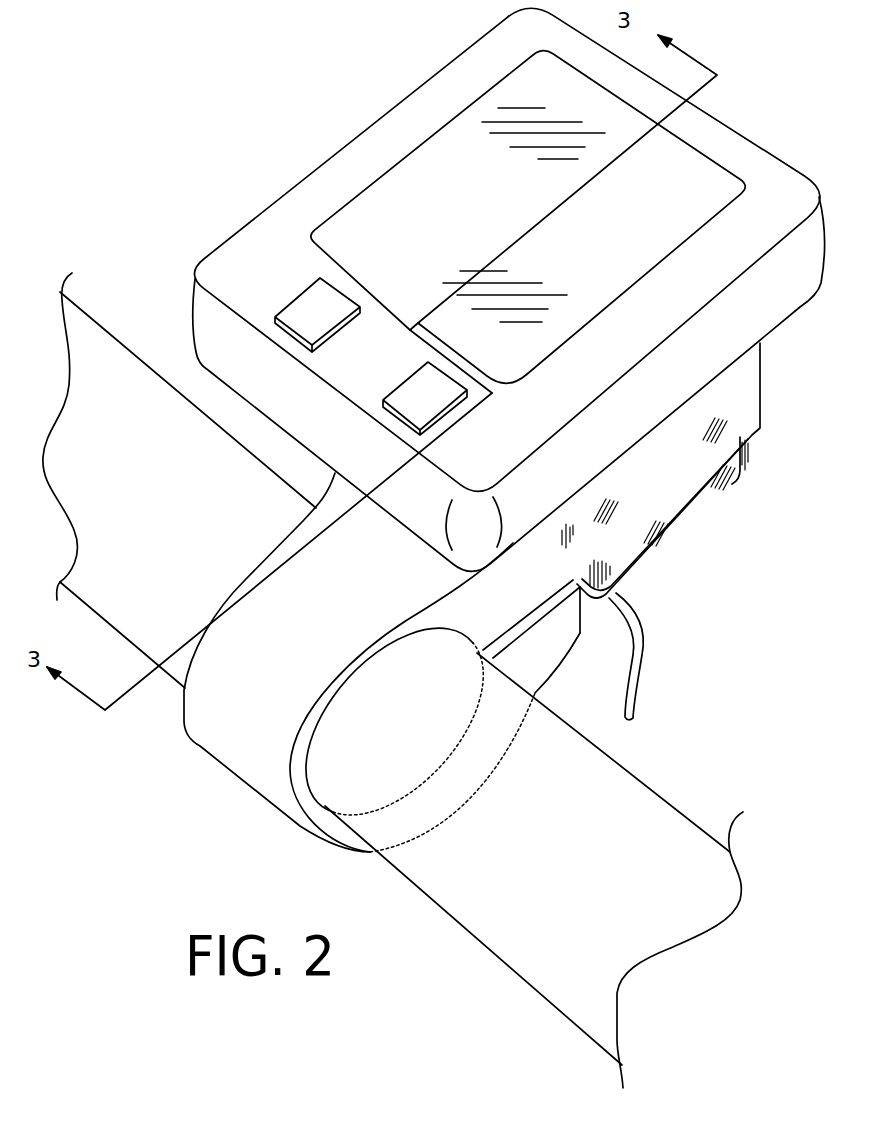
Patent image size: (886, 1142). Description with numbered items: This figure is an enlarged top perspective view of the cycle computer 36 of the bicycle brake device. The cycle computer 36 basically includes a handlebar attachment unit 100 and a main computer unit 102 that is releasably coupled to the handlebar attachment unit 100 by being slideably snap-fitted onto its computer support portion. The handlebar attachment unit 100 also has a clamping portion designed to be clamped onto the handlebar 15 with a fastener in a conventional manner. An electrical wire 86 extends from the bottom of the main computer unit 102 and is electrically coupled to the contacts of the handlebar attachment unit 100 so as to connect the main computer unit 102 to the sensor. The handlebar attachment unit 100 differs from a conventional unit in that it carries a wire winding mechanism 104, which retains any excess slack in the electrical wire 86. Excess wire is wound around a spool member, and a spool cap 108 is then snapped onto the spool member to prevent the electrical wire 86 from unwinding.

The handlebar 15 is at (706, 810).
The cycle computer 36 is at (774, 89).
The electrical wire 86 is at (641, 667).
The handlebar attachment unit 100 is at (776, 381).
The main computer unit 102 is at (318, 162).
The wire winding mechanism 104 is at (687, 548).
The spool cap 108 is at (723, 480).